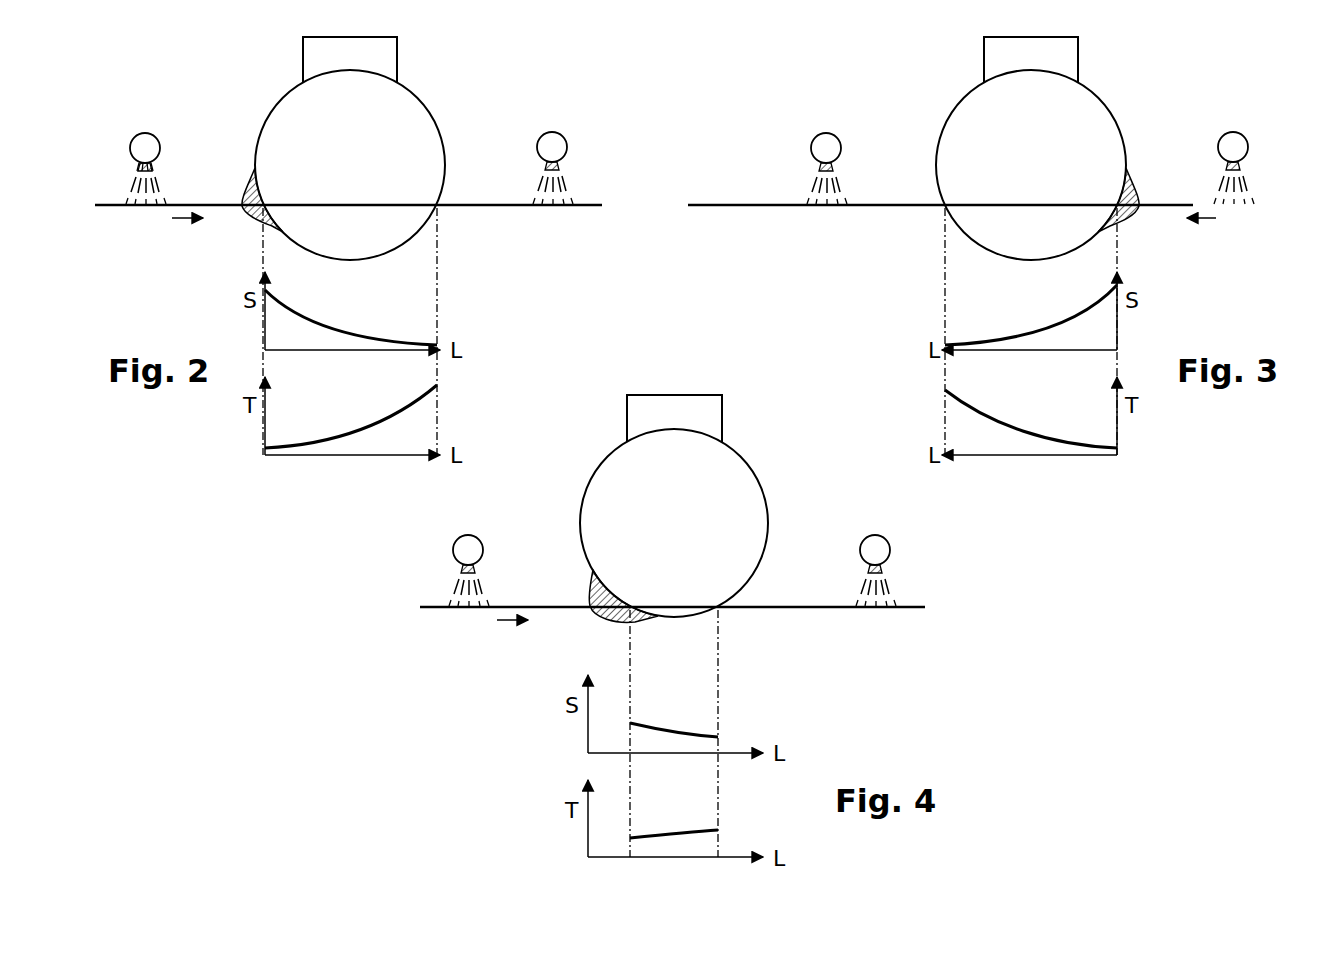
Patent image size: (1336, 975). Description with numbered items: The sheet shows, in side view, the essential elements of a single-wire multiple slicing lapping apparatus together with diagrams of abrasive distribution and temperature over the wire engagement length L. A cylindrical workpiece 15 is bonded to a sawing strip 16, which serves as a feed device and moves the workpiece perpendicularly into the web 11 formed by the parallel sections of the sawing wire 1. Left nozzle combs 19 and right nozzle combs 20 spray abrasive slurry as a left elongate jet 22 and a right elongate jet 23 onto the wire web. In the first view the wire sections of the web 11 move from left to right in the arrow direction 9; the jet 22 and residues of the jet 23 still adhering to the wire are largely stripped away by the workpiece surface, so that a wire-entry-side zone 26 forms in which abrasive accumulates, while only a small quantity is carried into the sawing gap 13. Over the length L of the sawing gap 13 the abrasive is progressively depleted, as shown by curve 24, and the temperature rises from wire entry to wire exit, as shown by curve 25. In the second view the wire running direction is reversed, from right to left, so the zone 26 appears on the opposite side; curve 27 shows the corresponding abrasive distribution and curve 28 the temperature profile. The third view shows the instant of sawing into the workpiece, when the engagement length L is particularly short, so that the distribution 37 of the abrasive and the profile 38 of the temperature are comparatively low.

In FIG. 2, the sawing wire 1 is at (348, 173).
In FIG. 3, the sawing wire 1 is at (940, 173).
In FIG. 4, the sawing wire 1 is at (672, 578).
In FIG. 2, the web 11 is at (225, 204).
In FIG. 3, the web 11 is at (906, 204).
In FIG. 4, the web 11 is at (548, 606).
In FIG. 2, the arrow direction 9 is at (182, 218).
In FIG. 3, the arrow direction 9 is at (1207, 218).
In FIG. 4, the arrow direction 9 is at (508, 620).
In FIG. 2, the sawing gap 13 is at (402, 204).
In FIG. 3, the sawing gap 13 is at (1093, 204).
In FIG. 4, the sawing gap 13 is at (695, 606).
In FIG. 2, the workpiece 15 is at (292, 104).
In FIG. 3, the workpiece 15 is at (973, 104).
In FIG. 4, the workpiece 15 is at (628, 468).
In FIG. 2, the sawing strip 16 is at (380, 58).
In FIG. 3, the sawing strip 16 is at (1061, 58).
In FIG. 4, the sawing strip 16 is at (700, 418).
In FIG. 2, the left nozzle combs 19 is at (145, 142).
In FIG. 3, the left nozzle combs 19 is at (826, 142).
In FIG. 4, the left nozzle combs 19 is at (468, 545).
In FIG. 2, the right nozzle combs 20 is at (552, 142).
In FIG. 3, the right nozzle combs 20 is at (1233, 142).
In FIG. 4, the right nozzle combs 20 is at (875, 545).
In FIG. 2, the left elongate jet 22 is at (130, 186).
In FIG. 3, the left elongate jet 22 is at (811, 186).
In FIG. 4, the left elongate jet 22 is at (452, 591).
In FIG. 2, the right elongate jet 23 is at (572, 186).
In FIG. 3, the right elongate jet 23 is at (1253, 186).
In FIG. 4, the right elongate jet 23 is at (893, 589).
In FIG. 2, the curve 24 is at (356, 330).
In FIG. 2, the curve 25 is at (354, 428).
In FIG. 2, the wire-entry-side zone 26 is at (246, 186).
In FIG. 3, the wire-entry-side zone 26 is at (1121, 210).
In FIG. 4, the wire-entry-side zone 26 is at (595, 598).
In FIG. 3, the curve 27 is at (1039, 330).
In FIG. 3, the curve 28 is at (1012, 430).
In FIG. 4, the distribution of the abrasive 37 is at (662, 726).
In FIG. 4, the profile of the temperature 38 is at (668, 836).